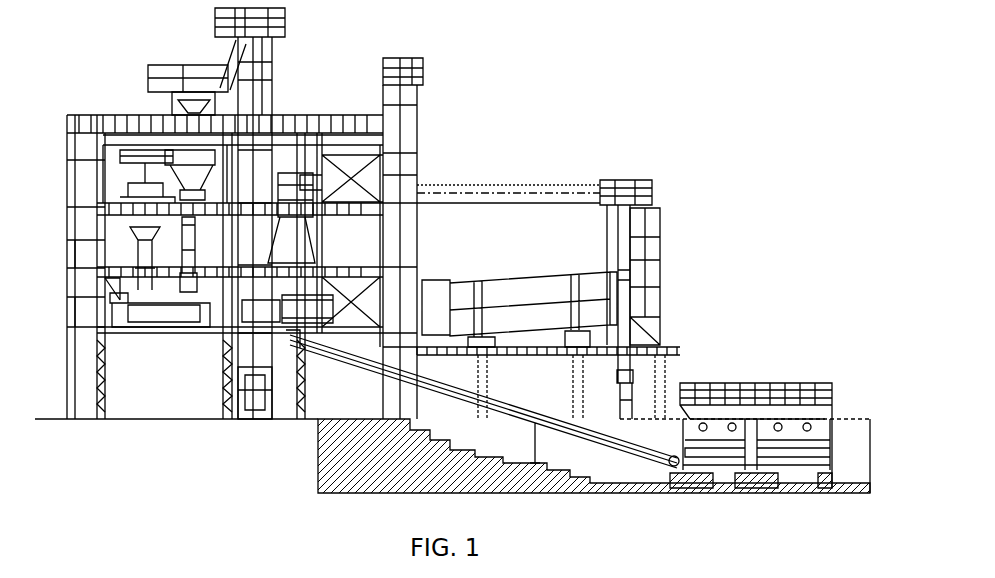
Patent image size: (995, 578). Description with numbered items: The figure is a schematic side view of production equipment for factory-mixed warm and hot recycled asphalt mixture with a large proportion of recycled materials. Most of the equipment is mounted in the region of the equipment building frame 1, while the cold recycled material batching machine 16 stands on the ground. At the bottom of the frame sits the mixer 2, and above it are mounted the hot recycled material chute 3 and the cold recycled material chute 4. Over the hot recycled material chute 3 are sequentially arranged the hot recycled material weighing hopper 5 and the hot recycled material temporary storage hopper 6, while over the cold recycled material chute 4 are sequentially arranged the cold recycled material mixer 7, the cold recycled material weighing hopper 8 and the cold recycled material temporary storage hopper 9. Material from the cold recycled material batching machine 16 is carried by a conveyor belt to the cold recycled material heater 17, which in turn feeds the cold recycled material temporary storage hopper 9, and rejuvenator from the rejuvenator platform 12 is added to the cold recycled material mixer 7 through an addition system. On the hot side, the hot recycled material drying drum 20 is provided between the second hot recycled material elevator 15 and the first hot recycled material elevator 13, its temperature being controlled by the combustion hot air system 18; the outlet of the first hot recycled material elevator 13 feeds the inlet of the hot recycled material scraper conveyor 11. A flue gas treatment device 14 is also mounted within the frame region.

The equipment building frame 1 is at (74, 372).
The mixer 2 is at (110, 300).
The hot recycled material chute 3 is at (140, 262).
The cold recycled material chute 4 is at (182, 257).
The hot recycled material weighing hopper 5 is at (138, 210).
The hot recycled material temporary storage hopper 6 is at (130, 168).
The cold recycled material mixer 7 is at (178, 190).
The cold recycled material weighing hopper 8 is at (165, 113).
The cold recycled material temporary storage hopper 9 is at (198, 95).
The hot recycled material scraper conveyor 11 is at (274, 118).
The rejuvenator platform 12 is at (305, 178).
The first hot recycled material elevator 13 is at (412, 62).
The flue gas treatment device 14 is at (383, 193).
The second hot recycled material elevator 15 is at (643, 178).
The cold recycled material batching machine 16 is at (770, 392).
The cold recycled material heater 17 is at (265, 422).
The combustion hot air system 18 is at (223, 342).
The hot recycled material drying drum 20 is at (617, 290).